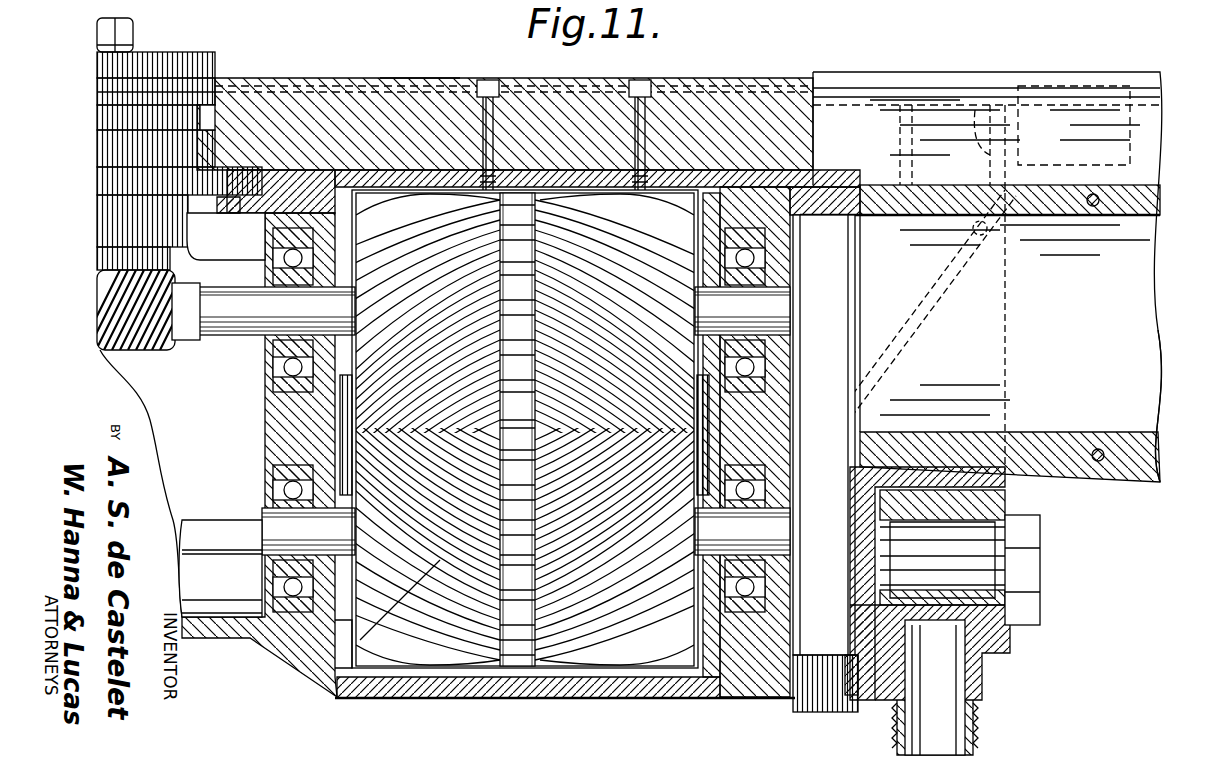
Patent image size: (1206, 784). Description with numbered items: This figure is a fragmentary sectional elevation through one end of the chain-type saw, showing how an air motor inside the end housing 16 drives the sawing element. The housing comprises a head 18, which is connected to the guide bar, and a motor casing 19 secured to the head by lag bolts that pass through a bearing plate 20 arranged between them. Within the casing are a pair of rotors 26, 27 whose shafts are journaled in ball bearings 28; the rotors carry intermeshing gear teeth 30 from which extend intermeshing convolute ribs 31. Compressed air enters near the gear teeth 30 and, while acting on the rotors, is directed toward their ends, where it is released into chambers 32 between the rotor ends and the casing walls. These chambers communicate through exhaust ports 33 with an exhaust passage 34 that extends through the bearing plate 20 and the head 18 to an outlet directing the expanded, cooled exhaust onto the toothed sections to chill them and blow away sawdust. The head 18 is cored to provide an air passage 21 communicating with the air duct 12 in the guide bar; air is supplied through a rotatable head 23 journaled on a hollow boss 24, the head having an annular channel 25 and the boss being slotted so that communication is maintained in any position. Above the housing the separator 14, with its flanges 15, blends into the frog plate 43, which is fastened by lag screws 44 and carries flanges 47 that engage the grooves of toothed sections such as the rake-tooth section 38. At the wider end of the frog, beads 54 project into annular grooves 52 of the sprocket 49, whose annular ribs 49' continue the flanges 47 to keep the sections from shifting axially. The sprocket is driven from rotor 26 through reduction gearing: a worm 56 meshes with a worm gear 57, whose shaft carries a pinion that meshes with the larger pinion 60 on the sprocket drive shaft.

The air duct 12 is at (981, 277).
The separator 14 is at (1160, 162).
The flanges 15 is at (900, 95).
The housing 16 is at (285, 668).
The head 18 is at (1005, 470).
The motor casing 19 is at (537, 700).
The bearing plate 20 is at (745, 692).
The air passage 21 is at (825, 463).
The rotatable head 23 is at (998, 655).
The hollow boss 24 is at (1030, 590).
The annular channel 25 is at (1010, 633).
The rotor 26 is at (356, 232).
The rotor 27 is at (425, 660).
The ball bearings 28 is at (273, 262).
The gear teeth 30 is at (528, 220).
The convolute ribs 31 is at (655, 230).
The chambers 32 is at (338, 692).
The exhaust ports 33 is at (340, 432).
The exhaust passage 34 is at (976, 100).
The toothed section 38 is at (1162, 118).
The frog plate 43 is at (427, 78).
The lag screws 44 is at (488, 79).
The flanges 47 is at (318, 80).
The sprocket 49 is at (166, 48).
The annular ribs 49' is at (136, 87).
The annular grooves 52 is at (100, 117).
The beads 54 is at (200, 118).
The worm 56 is at (150, 350).
The worm gear 57 is at (184, 345).
The larger pinion 60 is at (100, 222).